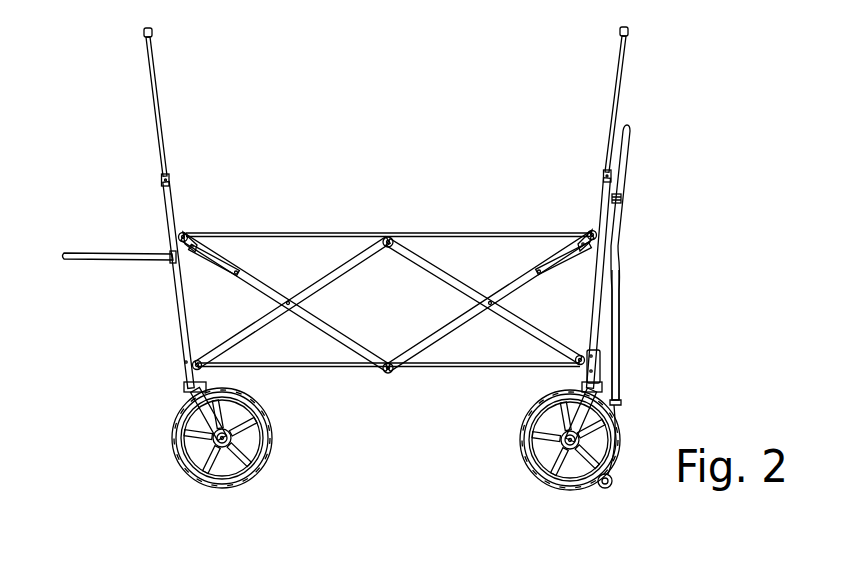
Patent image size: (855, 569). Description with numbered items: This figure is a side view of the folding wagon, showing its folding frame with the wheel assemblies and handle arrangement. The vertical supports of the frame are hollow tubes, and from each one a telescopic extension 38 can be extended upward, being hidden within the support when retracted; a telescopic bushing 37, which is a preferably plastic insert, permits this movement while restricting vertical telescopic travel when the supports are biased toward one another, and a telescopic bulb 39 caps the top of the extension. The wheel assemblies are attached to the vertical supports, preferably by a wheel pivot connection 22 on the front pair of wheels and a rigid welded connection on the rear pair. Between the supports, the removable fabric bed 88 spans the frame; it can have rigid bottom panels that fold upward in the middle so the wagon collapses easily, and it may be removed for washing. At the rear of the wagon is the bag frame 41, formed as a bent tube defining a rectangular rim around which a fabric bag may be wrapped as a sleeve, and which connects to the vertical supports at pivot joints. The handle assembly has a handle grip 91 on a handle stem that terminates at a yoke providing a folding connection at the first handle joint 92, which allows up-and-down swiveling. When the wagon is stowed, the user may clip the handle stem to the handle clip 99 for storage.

The wheel pivot connection 22 is at (600, 366).
The telescopic bushing 37 is at (161, 180).
The telescopic extension 38 is at (160, 112).
The telescopic bulb 39 is at (144, 33).
The bag frame 41 is at (65, 262).
The fabric bed 88 is at (285, 234).
The handle grip 91 is at (632, 130).
The first handle joint 92 is at (619, 315).
The handle clip 99 is at (620, 200).